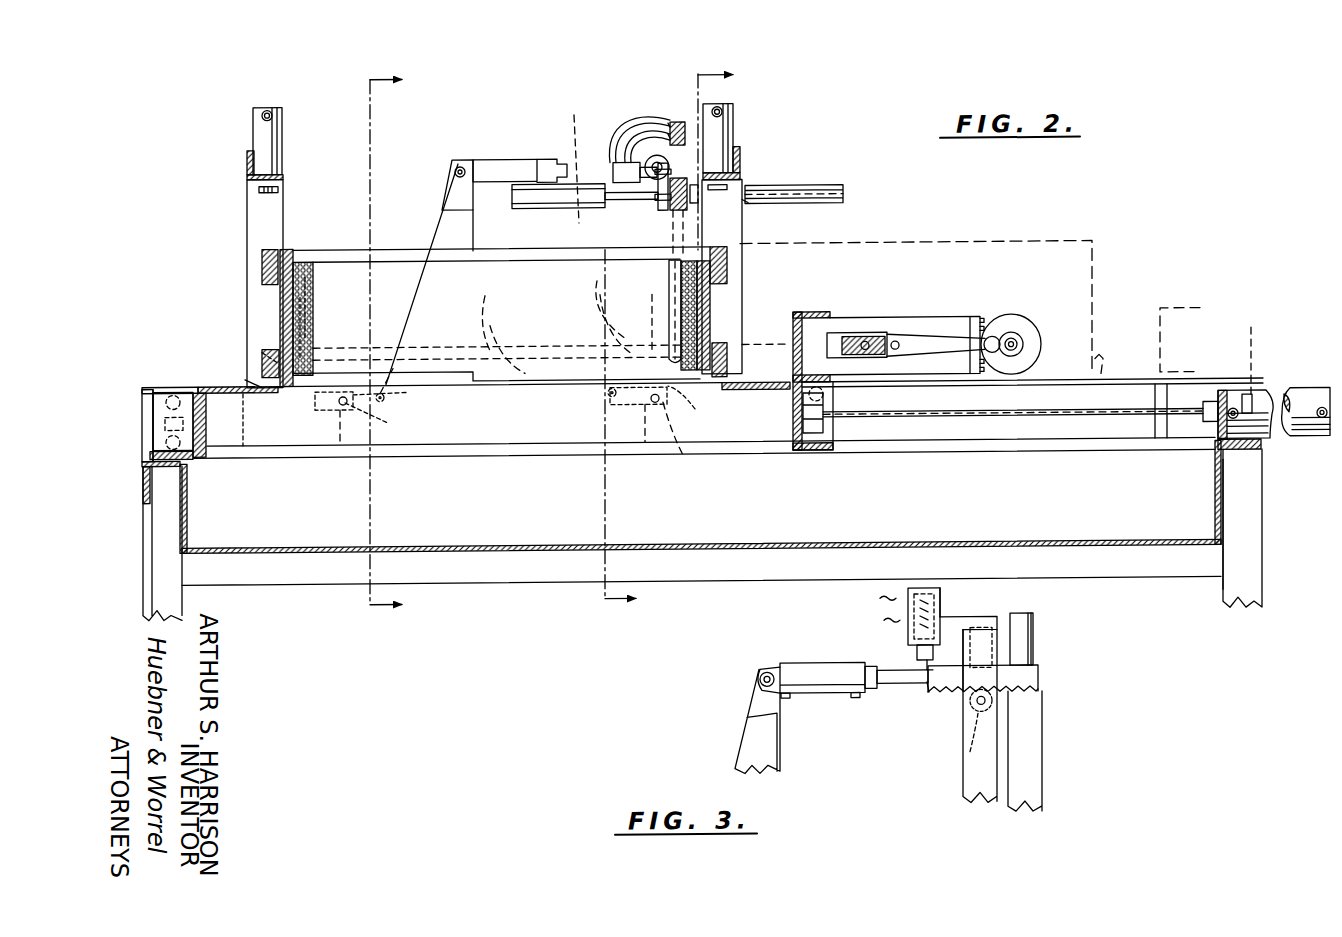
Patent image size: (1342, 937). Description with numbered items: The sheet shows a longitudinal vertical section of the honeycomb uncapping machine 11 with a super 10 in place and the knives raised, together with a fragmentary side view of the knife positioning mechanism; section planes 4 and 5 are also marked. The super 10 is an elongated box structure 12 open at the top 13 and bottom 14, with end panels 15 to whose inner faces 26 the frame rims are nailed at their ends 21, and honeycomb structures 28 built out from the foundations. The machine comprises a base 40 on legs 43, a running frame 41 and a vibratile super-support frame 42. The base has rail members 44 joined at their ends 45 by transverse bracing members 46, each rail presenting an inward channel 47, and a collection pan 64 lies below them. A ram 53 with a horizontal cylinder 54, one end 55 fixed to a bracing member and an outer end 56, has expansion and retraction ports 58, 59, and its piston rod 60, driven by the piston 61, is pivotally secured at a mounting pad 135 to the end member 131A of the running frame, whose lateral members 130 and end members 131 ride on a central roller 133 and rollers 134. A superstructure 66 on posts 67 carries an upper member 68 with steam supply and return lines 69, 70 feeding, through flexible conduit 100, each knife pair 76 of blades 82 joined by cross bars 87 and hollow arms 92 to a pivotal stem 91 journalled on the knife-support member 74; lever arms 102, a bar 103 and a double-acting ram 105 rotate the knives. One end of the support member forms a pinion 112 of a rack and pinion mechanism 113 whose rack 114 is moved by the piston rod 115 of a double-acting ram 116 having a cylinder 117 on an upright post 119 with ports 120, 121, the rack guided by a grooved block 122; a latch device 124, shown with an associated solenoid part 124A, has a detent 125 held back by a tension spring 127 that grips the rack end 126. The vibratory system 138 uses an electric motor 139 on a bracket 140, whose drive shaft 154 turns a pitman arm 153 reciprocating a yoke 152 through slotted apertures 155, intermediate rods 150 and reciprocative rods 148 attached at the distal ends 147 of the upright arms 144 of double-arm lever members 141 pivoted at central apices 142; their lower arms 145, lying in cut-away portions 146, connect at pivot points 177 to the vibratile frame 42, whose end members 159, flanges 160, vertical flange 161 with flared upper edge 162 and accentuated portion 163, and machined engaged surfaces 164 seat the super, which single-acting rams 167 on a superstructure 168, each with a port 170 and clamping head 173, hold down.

In FIG. 2, the super 10 is at (257, 247).
In FIG. 2, the honeycomb uncapping machine 11 is at (748, 154).
In FIG. 2, the box structure 12 is at (262, 272).
In FIG. 2, the top 13 is at (380, 253).
In FIG. 2, the bottom 14 is at (500, 388).
In FIG. 2, the end panels 15 is at (280, 304).
In FIG. 2, the opposite ends 21 is at (290, 254).
In FIG. 2, the inner faces 26 is at (309, 300).
In FIG. 2, the honeycomb structures 28 is at (301, 267).
In FIG. 2, the base 40 is at (1266, 568).
In FIG. 2, the running frame 41 is at (838, 456).
In FIG. 2, the vibratile super-support frame 42 is at (196, 388).
In FIG. 2, the legs 43 is at (160, 601).
In FIG. 2, the rail members 44 is at (1120, 389).
In FIG. 2, the ends 45 is at (148, 389).
In FIG. 2, the transverse bracing members 46 is at (145, 483).
In FIG. 2, the channel 47 is at (1110, 450).
In FIG. 2, the ram 53 is at (1291, 396).
In FIG. 2, the horizontal cylinder 54 is at (1328, 398).
In FIG. 2, the one end 55 is at (1230, 400).
In FIG. 2, the outer end 56 is at (1322, 430).
In FIG. 2, the expansion port 58 is at (1290, 443).
In FIG. 2, the retraction port 59 is at (1230, 430).
In FIG. 2, the piston rod 60 is at (1000, 427).
In FIG. 2, the piston 61 is at (1252, 344).
In FIG. 2, the collection pan 64 is at (1060, 550).
In FIG. 2, the superstructure 66 is at (682, 126).
In FIG. 3, the posts 67 is at (975, 796).
In FIG. 2, the upper member 68 is at (672, 128).
In FIG. 3, the upper member 68 is at (983, 635).
In FIG. 2, the steam supply line 69 is at (668, 129).
In FIG. 2, the steam return line 70 is at (668, 140).
In FIG. 2, the knife-support member 74 is at (664, 293).
In FIG. 2, the knife pair 76 is at (837, 188).
In FIG. 2, the blades 82 is at (549, 188).
In FIG. 2, the cross bars 87 is at (515, 188).
In FIG. 2, the pivotal stem 91 is at (610, 214).
In FIG. 2, the hollow arms 92 is at (592, 213).
In FIG. 2, the flexible conduit 100 is at (632, 126).
In FIG. 2, the lever arms 102 is at (668, 214).
In FIG. 2, the bar 103 is at (645, 172).
In FIG. 2, the double-acting ram 105 is at (628, 152).
In FIG. 3, the pinion 112 is at (972, 728).
In FIG. 2, the rack and pinion mechanism 113 is at (746, 208).
In FIG. 3, the rack and pinion mechanism 113 is at (958, 708).
In FIG. 3, the rack 114 is at (1040, 686).
In FIG. 2, the piston rod 115 is at (574, 122).
In FIG. 3, the piston rod 115 is at (893, 692).
In FIG. 2, the double-acting ram 116 is at (476, 164).
In FIG. 3, the double-acting ram 116 is at (820, 676).
In FIG. 3, the cylinder 117 is at (822, 675).
In FIG. 2, the upright post 119 is at (488, 303).
In FIG. 3, the upright post 119 is at (752, 749).
In FIG. 3, the expansion port 120 is at (785, 706).
In FIG. 3, the retraction port 121 is at (857, 706).
In FIG. 3, the grooved block 122 is at (1000, 670).
In FIG. 3, the latch device 124 is at (902, 636).
In FIG. 3, the valve lever 124A is at (880, 607).
In FIG. 3, the detent 125 is at (925, 679).
In FIG. 3, the end of the rack 126 is at (927, 693).
In FIG. 3, the tension spring 127 is at (942, 605).
In FIG. 2, the lateral members 130 is at (470, 455).
In FIG. 2, the end members 131 is at (196, 452).
In FIG. 2, the end member 131A is at (820, 459).
In FIG. 2, the central roller 133 is at (150, 429).
In FIG. 2, the rollers 134 is at (150, 404).
In FIG. 2, the mounting pad 135 is at (830, 440).
In FIG. 2, the vibratory system 138 is at (608, 403).
In FIG. 2, the electric motor 139 is at (1010, 340).
In FIG. 2, the bracket 140 is at (950, 325).
In FIG. 2, the double-arm lever members 141 is at (335, 399).
In FIG. 2, the central apices 142 is at (343, 411).
In FIG. 2, the upright arm 144 is at (275, 366).
In FIG. 2, the lower arm 145 is at (496, 444).
In FIG. 2, the cut-away portion 146 is at (537, 415).
In FIG. 2, the distal ends 147 is at (300, 330).
In FIG. 2, the reciprocative rods 148 is at (488, 332).
In FIG. 2, the intermediate rods 150 is at (672, 306).
In FIG. 2, the yoke 152 is at (880, 339).
In FIG. 2, the pitman arm 153 is at (945, 360).
In FIG. 2, the motor drive shaft 154 is at (1016, 348).
In FIG. 2, the slotted apertures 155 is at (852, 345).
In FIG. 2, the end members 159 is at (240, 388).
In FIG. 2, the flanges 160 is at (243, 397).
In FIG. 2, the vertical flange 161 is at (796, 356).
In FIG. 2, the flared upper edge 162 is at (797, 328).
In FIG. 2, the portion 163 is at (248, 381).
In FIG. 2, the engaged surfaces 164 is at (210, 443).
In FIG. 2, the single-acting rams 167 is at (253, 145).
In FIG. 3, the single-acting rams 167 is at (1036, 636).
In FIG. 2, the superstructure 168 is at (249, 166).
In FIG. 3, the superstructure 168 is at (1032, 733).
In FIG. 2, the expansion and retraction port 170 is at (264, 116).
In FIG. 2, the clamping head 173 is at (262, 194).
In FIG. 2, the pivot points 177 is at (534, 432).
In FIG. 2, the section line 4 is at (658, 331).
In FIG. 2, the section line 5 is at (375, 346).